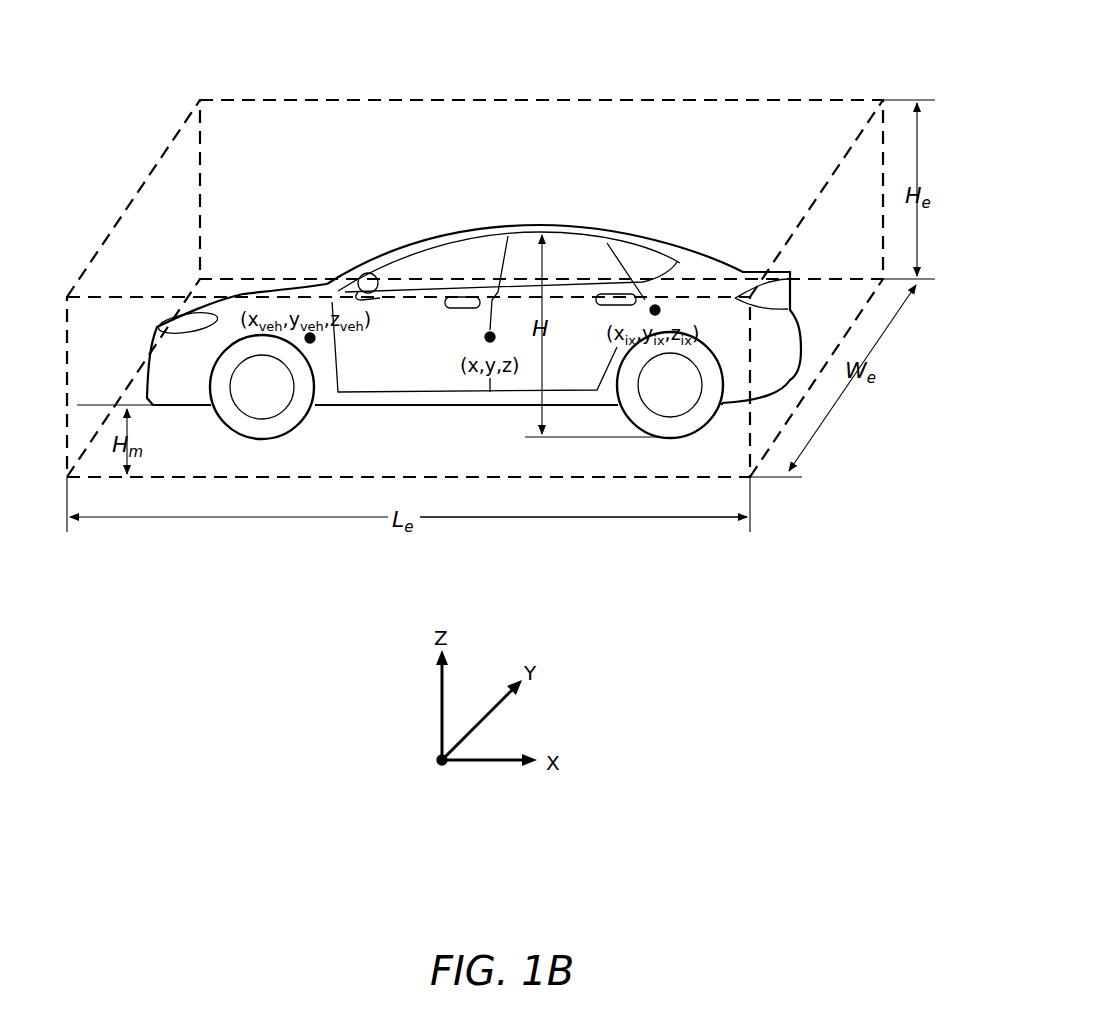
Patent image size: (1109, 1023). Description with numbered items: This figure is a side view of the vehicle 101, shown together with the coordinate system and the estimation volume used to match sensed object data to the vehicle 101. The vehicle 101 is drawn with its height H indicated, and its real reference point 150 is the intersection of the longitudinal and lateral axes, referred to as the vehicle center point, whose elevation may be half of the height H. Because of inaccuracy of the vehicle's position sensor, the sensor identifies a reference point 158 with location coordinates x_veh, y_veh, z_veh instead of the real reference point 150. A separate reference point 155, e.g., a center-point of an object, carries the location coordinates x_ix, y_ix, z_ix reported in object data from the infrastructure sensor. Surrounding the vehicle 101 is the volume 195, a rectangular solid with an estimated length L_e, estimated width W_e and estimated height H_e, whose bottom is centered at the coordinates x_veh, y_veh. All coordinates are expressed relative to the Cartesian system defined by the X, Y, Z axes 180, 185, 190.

The vehicle 101 is at (422, 237).
The reference point 150 is at (486, 336).
The reference point 155 is at (658, 306).
The reference point 158 is at (312, 343).
The X axis 180 is at (483, 763).
The Y axis 185 is at (487, 723).
The Z axis 190 is at (440, 707).
The volume 195 is at (751, 97).